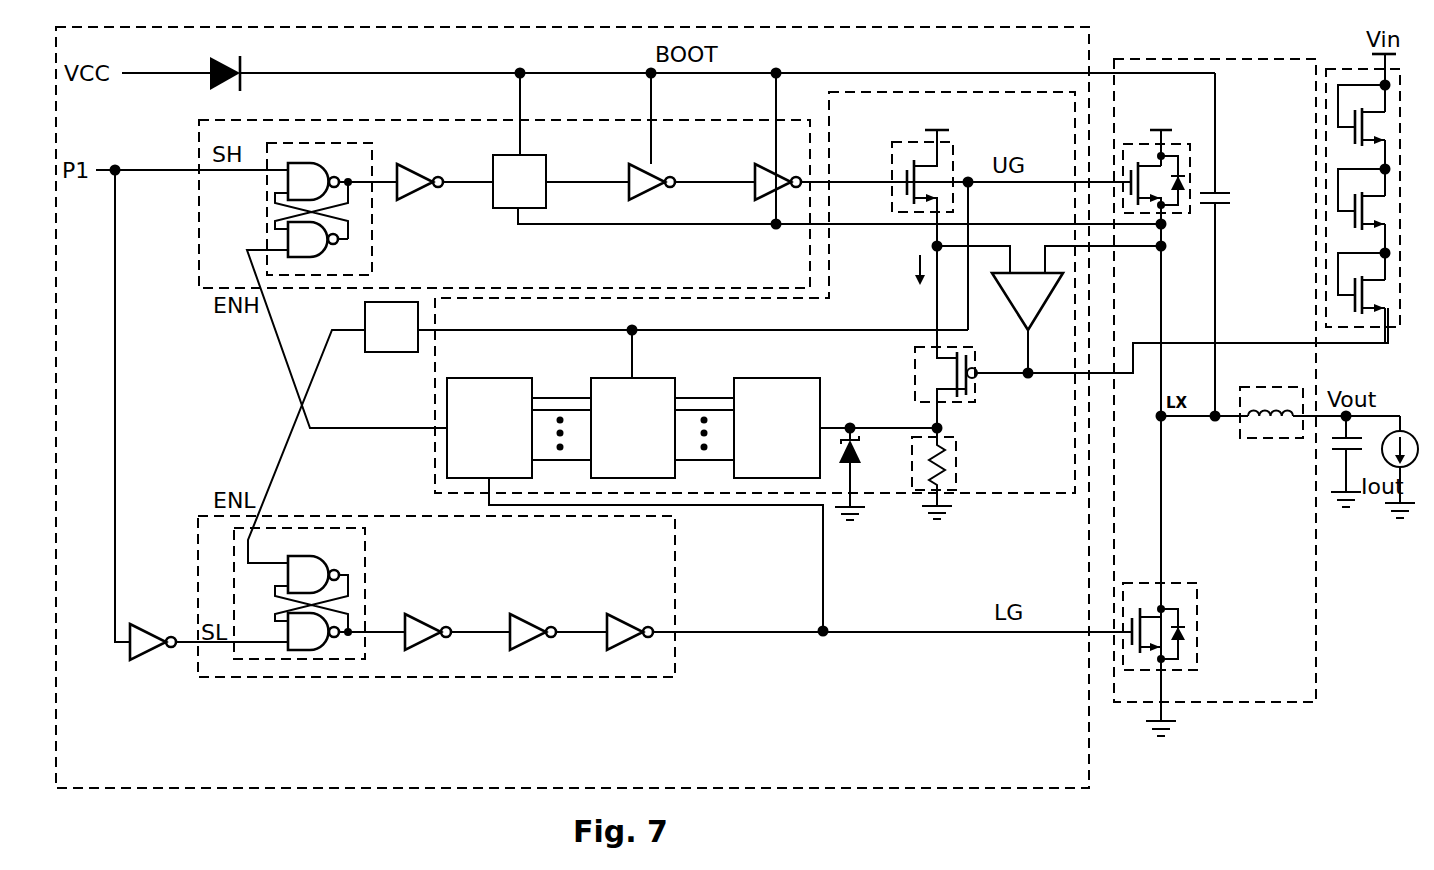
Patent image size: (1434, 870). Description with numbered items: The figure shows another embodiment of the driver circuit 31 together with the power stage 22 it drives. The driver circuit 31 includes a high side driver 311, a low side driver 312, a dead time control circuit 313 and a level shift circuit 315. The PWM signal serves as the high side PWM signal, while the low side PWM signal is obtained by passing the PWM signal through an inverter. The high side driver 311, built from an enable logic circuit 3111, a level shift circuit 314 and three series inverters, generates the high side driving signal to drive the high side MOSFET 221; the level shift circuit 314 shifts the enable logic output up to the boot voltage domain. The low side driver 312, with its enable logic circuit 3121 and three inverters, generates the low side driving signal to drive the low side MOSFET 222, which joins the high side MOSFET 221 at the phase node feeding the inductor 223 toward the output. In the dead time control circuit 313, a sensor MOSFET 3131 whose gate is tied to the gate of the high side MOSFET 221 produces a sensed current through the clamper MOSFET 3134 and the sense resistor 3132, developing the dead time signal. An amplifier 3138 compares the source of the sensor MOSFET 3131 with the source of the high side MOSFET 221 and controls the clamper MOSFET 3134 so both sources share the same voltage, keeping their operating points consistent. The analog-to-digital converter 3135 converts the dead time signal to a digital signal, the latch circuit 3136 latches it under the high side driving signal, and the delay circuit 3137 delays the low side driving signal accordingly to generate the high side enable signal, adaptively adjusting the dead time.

The driver circuit 31 is at (1073, 779).
The high side driver 311 is at (797, 282).
The low side driver 312 is at (645, 558).
The dead time control circuit 313 is at (1053, 483).
The level shift circuit 314 is at (500, 194).
The level shift circuit 315 is at (372, 339).
The enable logic circuit 3111 is at (266, 183).
The enable logic circuit 3121 is at (365, 542).
The sensor MOSFET 3131 is at (917, 140).
The sense resistor 3132 is at (912, 463).
The clamper MOSFET 3134 is at (915, 382).
The analog-to-digital converter 3135 is at (752, 442).
The latch circuit 3136 is at (608, 442).
The delay circuit 3137 is at (465, 442).
The amplifier 3138 is at (1005, 307).
The power stage 22 is at (1298, 688).
The high side MOSFET 221 is at (1175, 143).
The low side MOSFET 222 is at (1170, 583).
The inductor 223 is at (1245, 387).